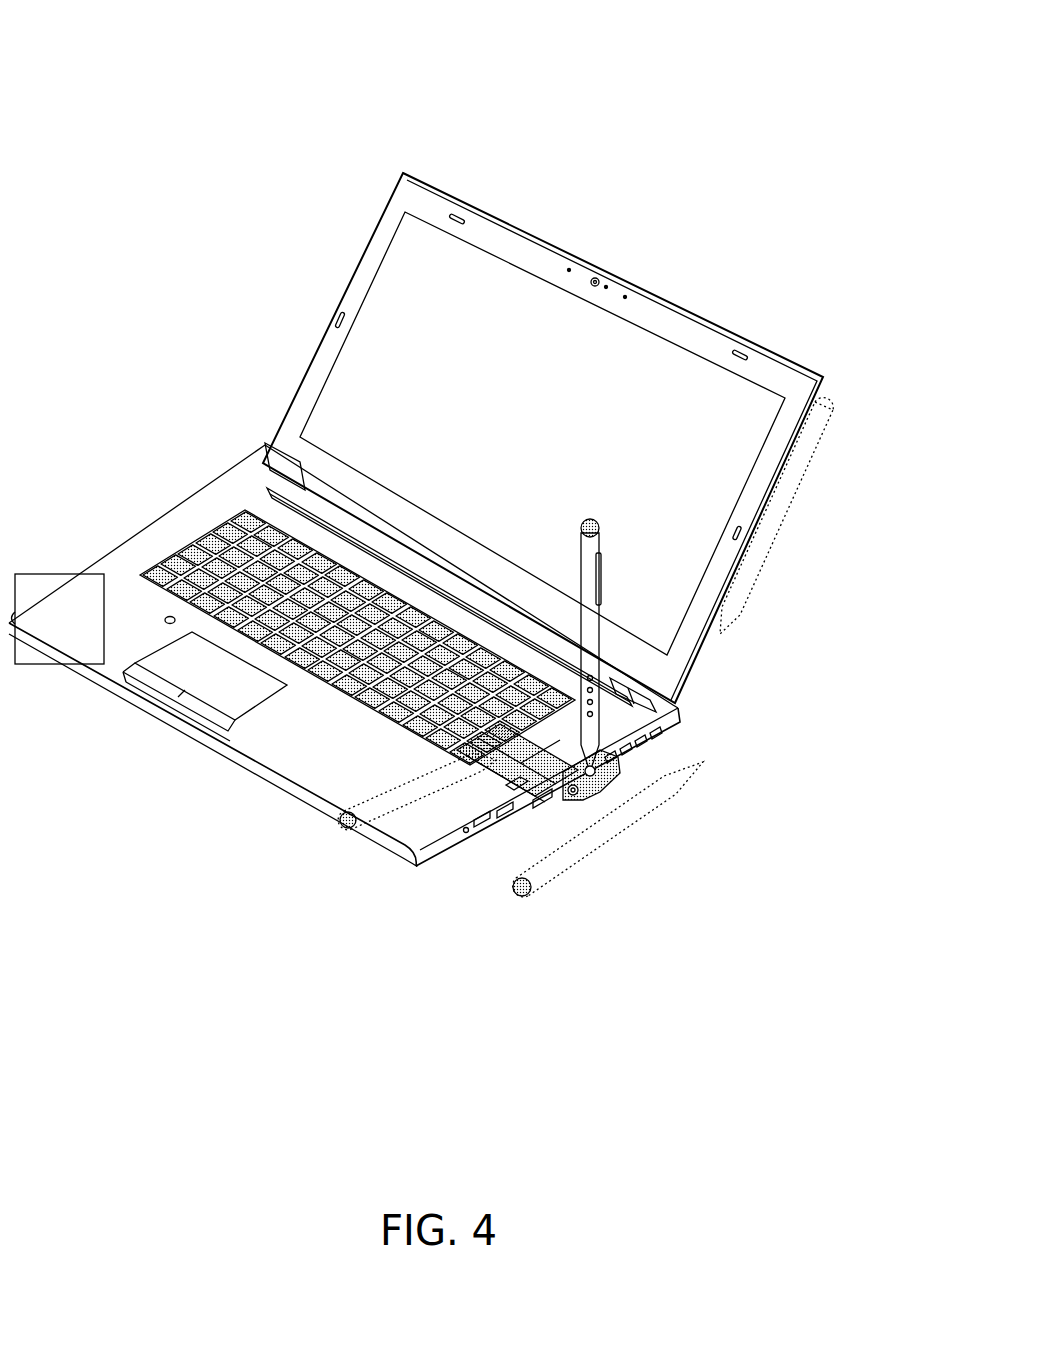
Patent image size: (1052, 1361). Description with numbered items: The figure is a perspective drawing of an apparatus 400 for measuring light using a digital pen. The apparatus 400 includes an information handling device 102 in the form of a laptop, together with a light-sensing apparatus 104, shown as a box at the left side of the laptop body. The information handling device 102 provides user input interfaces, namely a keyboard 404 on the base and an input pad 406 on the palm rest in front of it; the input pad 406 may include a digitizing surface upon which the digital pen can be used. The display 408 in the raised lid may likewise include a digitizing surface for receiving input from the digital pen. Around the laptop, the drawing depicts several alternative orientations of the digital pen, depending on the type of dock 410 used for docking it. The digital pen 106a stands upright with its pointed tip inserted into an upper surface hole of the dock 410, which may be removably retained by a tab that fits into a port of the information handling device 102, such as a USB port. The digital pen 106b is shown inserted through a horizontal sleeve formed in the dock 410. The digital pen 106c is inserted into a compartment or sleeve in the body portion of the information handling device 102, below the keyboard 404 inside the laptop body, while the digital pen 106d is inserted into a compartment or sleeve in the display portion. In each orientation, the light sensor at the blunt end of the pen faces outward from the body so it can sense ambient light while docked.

The apparatus 400 is at (186, 85).
The information handling device 102 is at (347, 753).
The light-sensing apparatus 104 is at (79, 634).
The keyboard 404 is at (220, 553).
The input pad 406 is at (210, 675).
The display 408 is at (467, 348).
The dock 410 is at (610, 783).
The digital pen 106a is at (585, 645).
The digital pen 106b is at (583, 857).
The digital pen 106c is at (430, 780).
The digital pen 106d is at (778, 530).